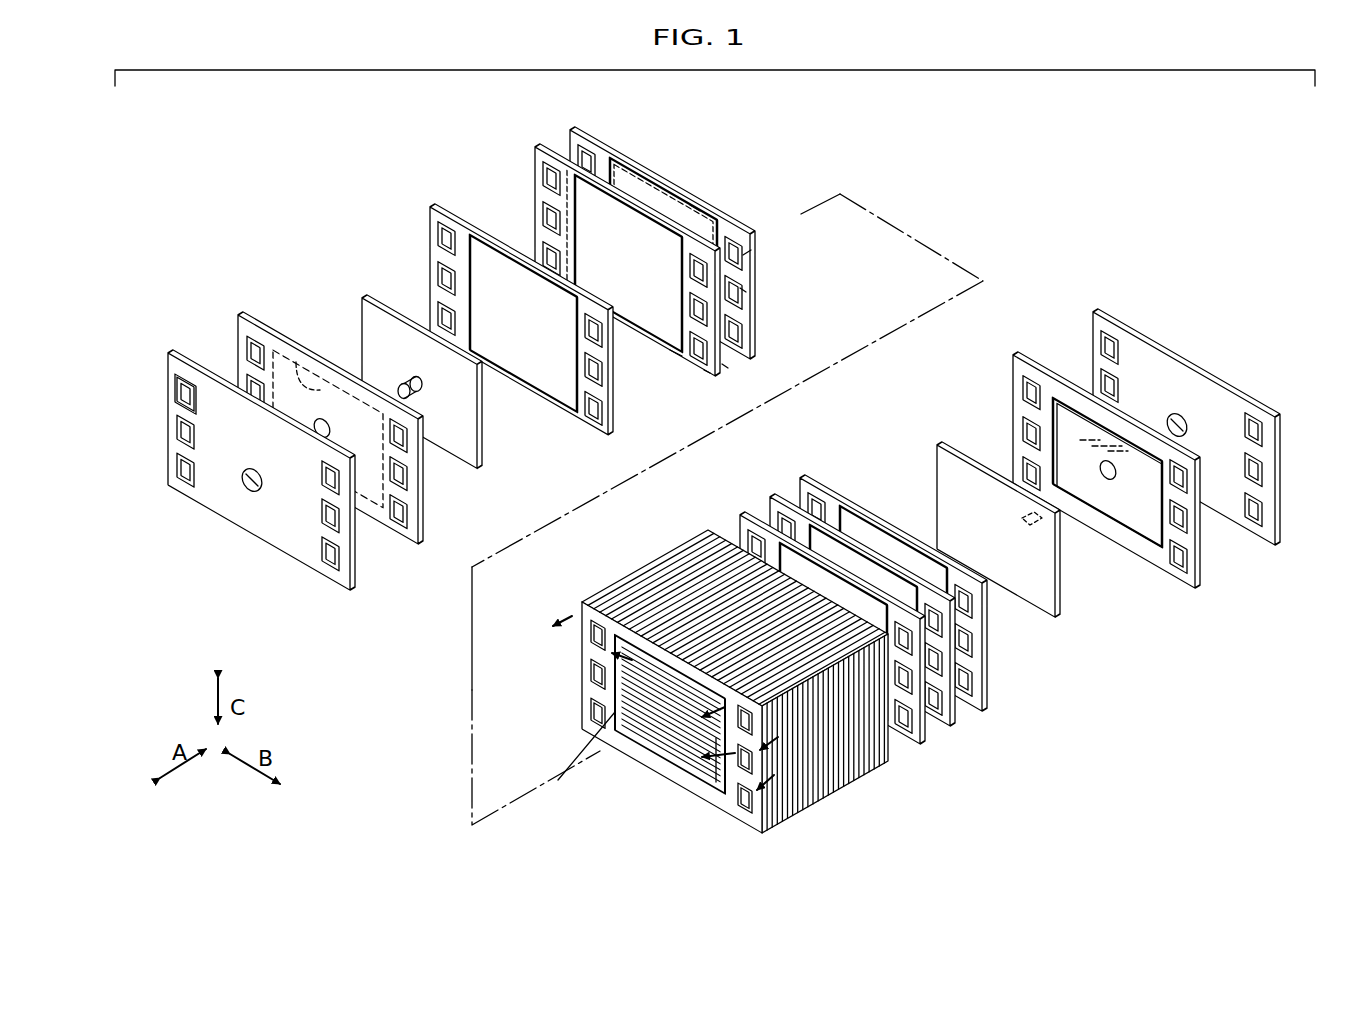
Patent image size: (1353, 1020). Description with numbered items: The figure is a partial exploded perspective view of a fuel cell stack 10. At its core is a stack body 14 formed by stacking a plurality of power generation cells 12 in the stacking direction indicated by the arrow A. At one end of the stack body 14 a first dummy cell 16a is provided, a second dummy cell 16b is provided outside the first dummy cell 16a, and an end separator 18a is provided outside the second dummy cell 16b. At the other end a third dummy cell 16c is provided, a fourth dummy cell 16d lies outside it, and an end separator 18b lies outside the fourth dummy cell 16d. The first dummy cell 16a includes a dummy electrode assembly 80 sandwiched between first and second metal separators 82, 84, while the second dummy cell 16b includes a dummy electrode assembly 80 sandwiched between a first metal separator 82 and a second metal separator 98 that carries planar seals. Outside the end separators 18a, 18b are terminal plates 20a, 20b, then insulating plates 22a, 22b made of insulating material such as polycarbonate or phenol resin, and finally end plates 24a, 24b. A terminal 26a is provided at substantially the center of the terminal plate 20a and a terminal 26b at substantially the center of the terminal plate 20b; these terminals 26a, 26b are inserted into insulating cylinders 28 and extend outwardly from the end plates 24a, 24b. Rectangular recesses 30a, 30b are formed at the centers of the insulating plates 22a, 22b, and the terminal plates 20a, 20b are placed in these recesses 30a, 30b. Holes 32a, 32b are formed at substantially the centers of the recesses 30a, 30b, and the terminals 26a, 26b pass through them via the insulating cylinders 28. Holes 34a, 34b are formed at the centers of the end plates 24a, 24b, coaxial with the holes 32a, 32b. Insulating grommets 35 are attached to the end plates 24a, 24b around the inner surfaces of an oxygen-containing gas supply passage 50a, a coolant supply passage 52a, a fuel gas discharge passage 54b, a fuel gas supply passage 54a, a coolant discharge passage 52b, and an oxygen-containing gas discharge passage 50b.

The fuel cell stack 10 is at (1033, 197).
The power generation cell 12 is at (828, 805).
The stack body 14 is at (727, 696).
The first dummy cell 16a is at (568, 130).
The second dummy cell 16b is at (535, 150).
The third dummy cell 16c is at (925, 752).
The fourth dummy cell 16d is at (955, 735).
The end separator 18a is at (430, 208).
The end separator 18b is at (986, 715).
The terminal plate 20a is at (393, 330).
The terminal plate 20b is at (937, 487).
The insulating plate 22a is at (243, 312).
The insulating plate 22b is at (1200, 587).
The end plate 24a is at (232, 530).
The end plate 24b is at (1243, 395).
The terminal 26a is at (400, 388).
The terminal 26b is at (1040, 535).
The insulating cylinder 28 is at (422, 383).
The rectangular recess 30a is at (305, 345).
The rectangular recess 30b is at (1052, 410).
The hole 32a is at (322, 418).
The hole 32b is at (1112, 478).
The hole 34a is at (248, 473).
The hole 34b is at (1172, 420).
The insulating grommet 35 is at (174, 372).
The oxygen-containing gas supply passage 50a is at (322, 468).
The oxygen-containing gas discharge passage 50b is at (178, 463).
The coolant supply passage 52a is at (322, 515).
The coolant discharge passage 52b is at (178, 420).
The fuel gas supply passage 54a is at (178, 382).
The fuel gas discharge passage 54b is at (335, 565).
The dummy electrode assembly 80 is at (698, 198).
The first metal separator 82 is at (748, 290).
The second metal separator 84 is at (752, 268).
The second metal separator 98 is at (728, 368).